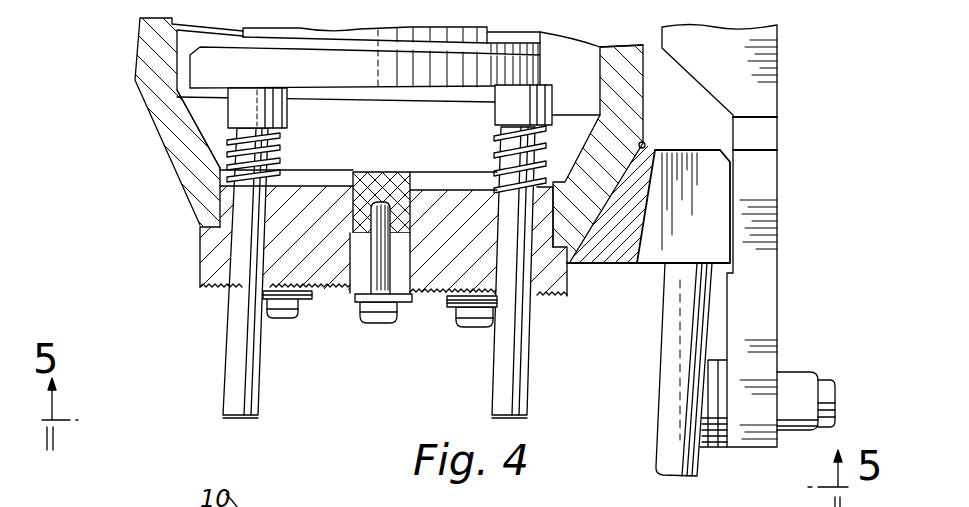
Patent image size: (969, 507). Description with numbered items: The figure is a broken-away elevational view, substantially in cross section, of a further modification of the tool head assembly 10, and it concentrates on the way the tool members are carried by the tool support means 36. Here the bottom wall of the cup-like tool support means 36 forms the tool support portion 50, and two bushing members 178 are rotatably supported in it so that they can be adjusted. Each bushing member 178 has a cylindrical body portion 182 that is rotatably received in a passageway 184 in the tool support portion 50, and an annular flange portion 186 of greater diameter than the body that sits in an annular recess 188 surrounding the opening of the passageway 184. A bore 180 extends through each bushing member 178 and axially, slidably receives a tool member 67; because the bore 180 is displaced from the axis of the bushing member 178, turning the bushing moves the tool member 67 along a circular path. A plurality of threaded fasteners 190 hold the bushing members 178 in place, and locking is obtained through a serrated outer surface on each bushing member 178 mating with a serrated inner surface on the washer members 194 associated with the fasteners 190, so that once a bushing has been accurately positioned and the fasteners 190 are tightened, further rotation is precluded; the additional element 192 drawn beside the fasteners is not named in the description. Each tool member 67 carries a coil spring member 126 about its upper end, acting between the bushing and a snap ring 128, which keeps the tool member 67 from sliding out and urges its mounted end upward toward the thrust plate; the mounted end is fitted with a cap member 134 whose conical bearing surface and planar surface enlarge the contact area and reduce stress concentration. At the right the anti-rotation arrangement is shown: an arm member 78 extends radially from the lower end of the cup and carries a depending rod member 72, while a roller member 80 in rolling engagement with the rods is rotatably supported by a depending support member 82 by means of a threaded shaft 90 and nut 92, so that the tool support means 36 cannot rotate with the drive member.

The tool head assembly 10 is at (138, 49).
The tool support means 36 is at (135, 118).
The tool support portion 50 is at (218, 172).
The tool member 67 is at (238, 388).
The rod member 72 is at (672, 418).
The arm member 78 is at (644, 144).
The roller member 80 is at (710, 445).
The support member 82 is at (762, 52).
The threaded shaft 90 is at (838, 395).
The nut 92 is at (812, 372).
The coil spring member 126 is at (280, 162).
The snap ring 128 is at (296, 120).
The cap member 134 is at (270, 106).
The bushing member 178 is at (210, 288).
The bore 180 is at (265, 214).
The cylindrical body portion 182 is at (222, 200).
The passageway 184 is at (354, 172).
The annular flange portion 186 is at (212, 258).
The annular recess 188 is at (200, 243).
The threaded fastener 190 is at (278, 320).
The washer 192 is at (322, 300).
The washer member 194 is at (352, 270).